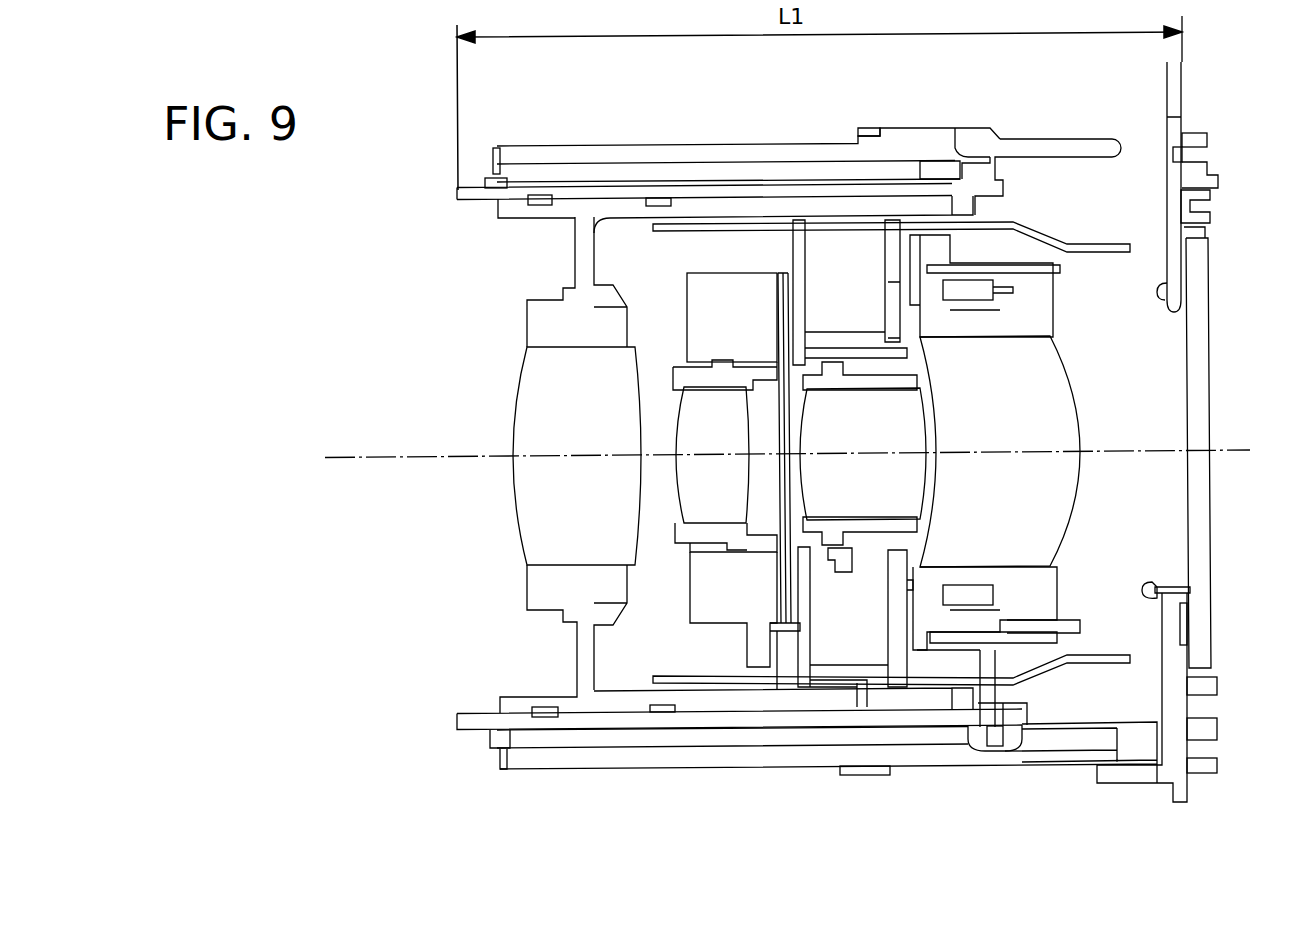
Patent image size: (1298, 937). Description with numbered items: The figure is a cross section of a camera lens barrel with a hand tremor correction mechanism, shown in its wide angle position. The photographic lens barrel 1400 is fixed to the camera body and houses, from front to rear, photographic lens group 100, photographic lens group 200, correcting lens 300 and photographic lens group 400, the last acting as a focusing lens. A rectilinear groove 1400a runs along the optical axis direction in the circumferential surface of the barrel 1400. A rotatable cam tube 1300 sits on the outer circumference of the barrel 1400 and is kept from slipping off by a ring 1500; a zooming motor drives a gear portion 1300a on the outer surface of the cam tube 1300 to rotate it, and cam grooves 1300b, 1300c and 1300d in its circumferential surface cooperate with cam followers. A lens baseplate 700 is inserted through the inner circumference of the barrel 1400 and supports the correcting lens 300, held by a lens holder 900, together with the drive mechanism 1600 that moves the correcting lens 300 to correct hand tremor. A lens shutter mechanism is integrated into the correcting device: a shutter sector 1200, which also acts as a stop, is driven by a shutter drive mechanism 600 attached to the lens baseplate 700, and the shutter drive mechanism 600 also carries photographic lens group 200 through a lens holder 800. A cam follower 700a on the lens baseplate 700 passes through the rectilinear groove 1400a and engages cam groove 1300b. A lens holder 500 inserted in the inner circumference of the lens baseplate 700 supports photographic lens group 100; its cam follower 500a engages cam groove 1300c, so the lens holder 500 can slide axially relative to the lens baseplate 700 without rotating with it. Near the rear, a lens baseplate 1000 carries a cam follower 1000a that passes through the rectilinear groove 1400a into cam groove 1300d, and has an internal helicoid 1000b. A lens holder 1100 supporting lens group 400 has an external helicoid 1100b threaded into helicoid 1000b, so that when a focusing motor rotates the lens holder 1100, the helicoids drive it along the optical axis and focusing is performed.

The photographic lens group 100 is at (525, 518).
The photographic lens group 200 is at (697, 484).
The correcting lens 300 is at (915, 435).
The photographic lens group 400 is at (1060, 518).
The lens holder 500 is at (725, 205).
The cam follower 500a is at (990, 163).
The shutter drive mechanism 600 is at (757, 290).
The lens baseplate 700 is at (627, 190).
The cam follower 700a is at (980, 752).
The lens holder 800 is at (690, 378).
The lens holder 900 is at (920, 380).
The lens baseplate 1000 is at (1057, 280).
The cam follower 1000a is at (1020, 745).
The helicoid 1000b is at (1060, 272).
The lens holder 1100 is at (1003, 298).
The helicoid 1100b is at (1015, 238).
The shutter sector 1200 is at (790, 480).
The cam tube 1300 is at (913, 161).
The gear portion 1300a is at (858, 135).
The cam groove 1300b is at (968, 745).
The cam groove 1300c is at (958, 137).
The cam groove 1300d is at (1015, 752).
The photographic lens barrel 1400 is at (675, 172).
The rectilinear groove 1400a is at (830, 738).
The ring 1500 is at (503, 148).
The drive mechanism 1600 is at (835, 252).